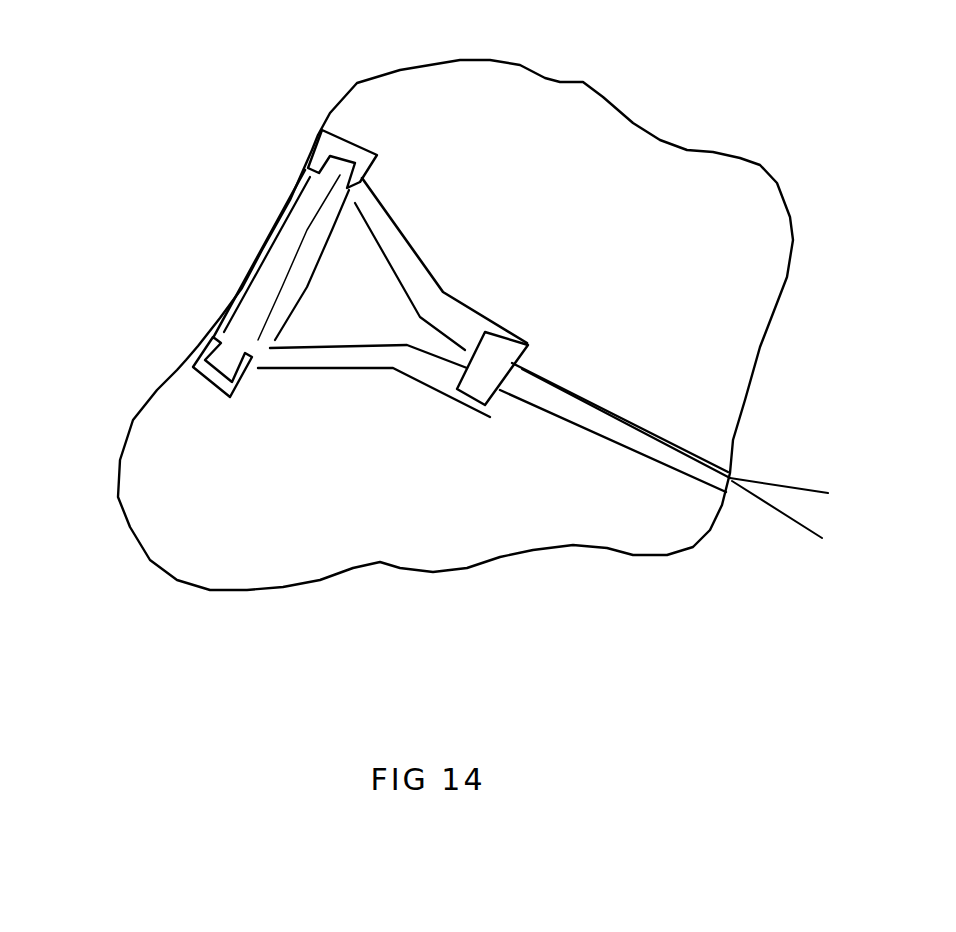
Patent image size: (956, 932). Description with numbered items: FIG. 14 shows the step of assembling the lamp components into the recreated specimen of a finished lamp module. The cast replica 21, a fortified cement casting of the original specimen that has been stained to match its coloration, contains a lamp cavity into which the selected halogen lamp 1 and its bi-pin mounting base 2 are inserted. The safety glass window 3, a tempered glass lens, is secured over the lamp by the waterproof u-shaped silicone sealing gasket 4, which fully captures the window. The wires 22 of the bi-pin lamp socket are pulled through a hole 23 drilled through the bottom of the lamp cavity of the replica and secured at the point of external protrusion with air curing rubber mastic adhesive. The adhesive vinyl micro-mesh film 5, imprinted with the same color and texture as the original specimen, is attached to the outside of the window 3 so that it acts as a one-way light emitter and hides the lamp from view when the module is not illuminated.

The halogen lamp 1 is at (358, 277).
The mounting base 2 is at (490, 358).
The safety glass window 3 is at (250, 317).
The sealing gasket 4 is at (322, 147).
The micro-mesh film 5 is at (258, 255).
The cast replica 21 is at (200, 542).
The wires 22 is at (763, 480).
The hole 23 is at (702, 482).